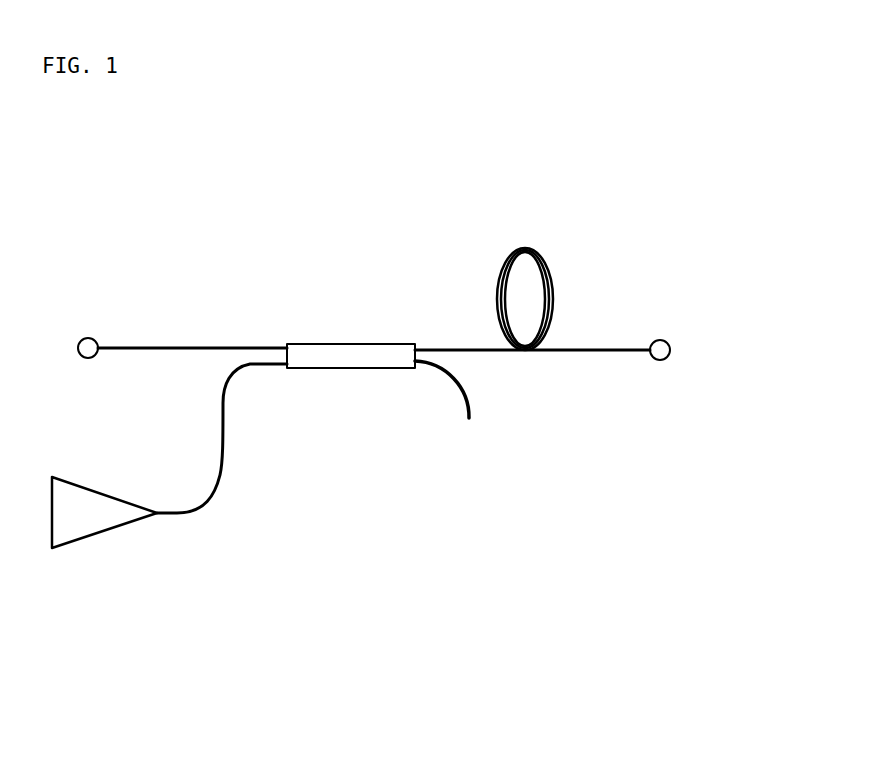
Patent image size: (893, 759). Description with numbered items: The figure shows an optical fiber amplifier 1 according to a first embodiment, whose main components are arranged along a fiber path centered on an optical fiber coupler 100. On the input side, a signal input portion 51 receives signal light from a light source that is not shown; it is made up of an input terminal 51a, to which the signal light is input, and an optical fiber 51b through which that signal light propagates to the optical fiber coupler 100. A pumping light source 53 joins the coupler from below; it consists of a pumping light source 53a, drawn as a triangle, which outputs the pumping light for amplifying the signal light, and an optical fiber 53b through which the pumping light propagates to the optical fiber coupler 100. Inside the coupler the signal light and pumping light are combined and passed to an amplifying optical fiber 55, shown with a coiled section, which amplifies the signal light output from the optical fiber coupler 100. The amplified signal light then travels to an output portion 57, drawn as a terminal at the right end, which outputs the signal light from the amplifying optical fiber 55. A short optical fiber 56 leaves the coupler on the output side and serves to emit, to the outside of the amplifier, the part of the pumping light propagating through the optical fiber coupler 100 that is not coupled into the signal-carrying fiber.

The optical fiber amplifier 1 is at (437, 232).
The signal input portion 51 is at (182, 270).
The input terminal 51a is at (95, 340).
The optical fiber 51b is at (153, 347).
The pumping light source 53 is at (198, 505).
The pumping light source 53a is at (110, 522).
The optical fiber 53b is at (222, 455).
The amplifying optical fiber 55 is at (478, 352).
The optical fiber for emitting pumping light 56 is at (470, 410).
The output portion 57 is at (663, 357).
The optical fiber coupler 100 is at (307, 358).